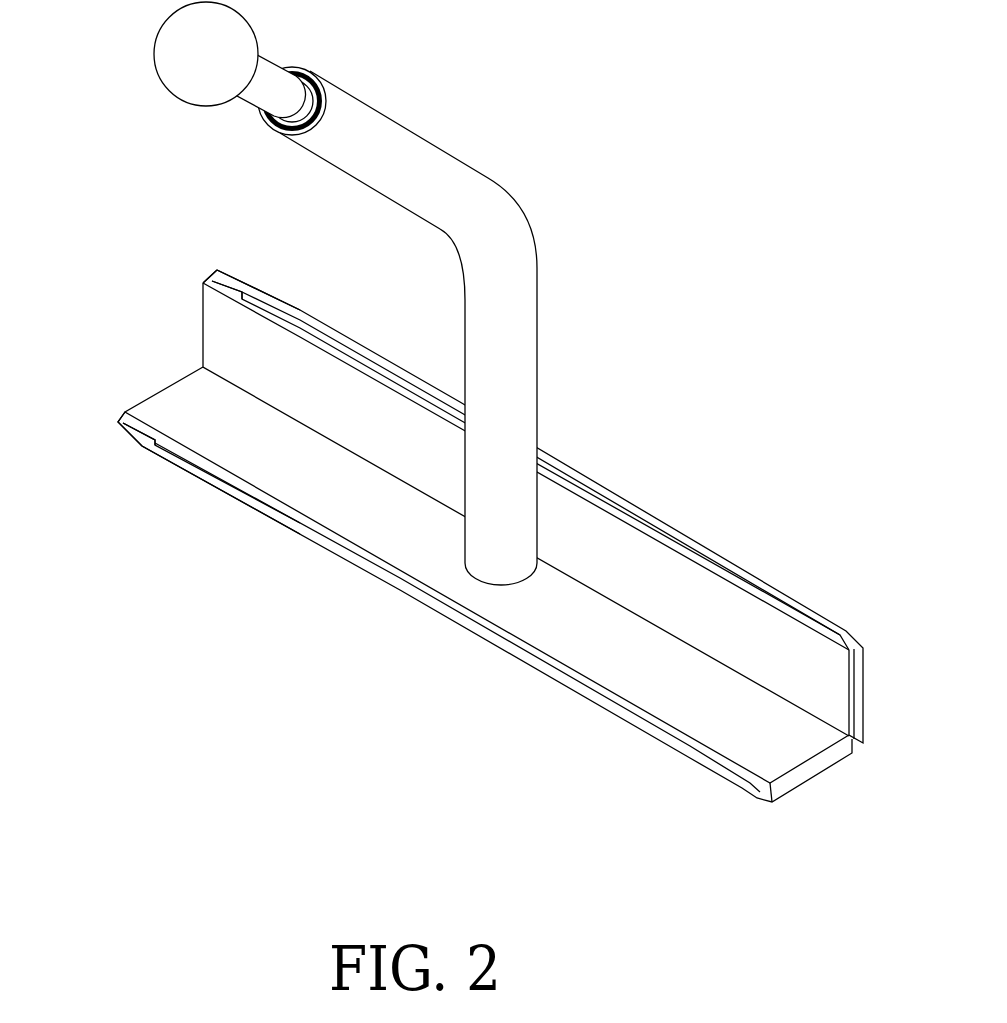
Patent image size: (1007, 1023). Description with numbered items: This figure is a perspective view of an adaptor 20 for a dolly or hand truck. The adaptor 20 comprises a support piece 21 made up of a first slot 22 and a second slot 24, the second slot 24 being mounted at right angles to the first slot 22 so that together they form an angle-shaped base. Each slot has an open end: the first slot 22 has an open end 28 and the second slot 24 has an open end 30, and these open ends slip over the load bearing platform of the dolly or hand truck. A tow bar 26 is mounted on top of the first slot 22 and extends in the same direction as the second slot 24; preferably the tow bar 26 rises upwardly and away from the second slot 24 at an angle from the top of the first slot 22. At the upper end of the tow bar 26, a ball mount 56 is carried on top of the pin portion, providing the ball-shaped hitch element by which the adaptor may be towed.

The adaptor 20 is at (366, 293).
The support piece 21 is at (476, 523).
The first slot 22 is at (622, 732).
The second slot 24 is at (757, 570).
The tow bar 26 is at (513, 367).
The open end 28 is at (234, 489).
The open end 30 is at (279, 308).
The ball mount 56 is at (178, 45).